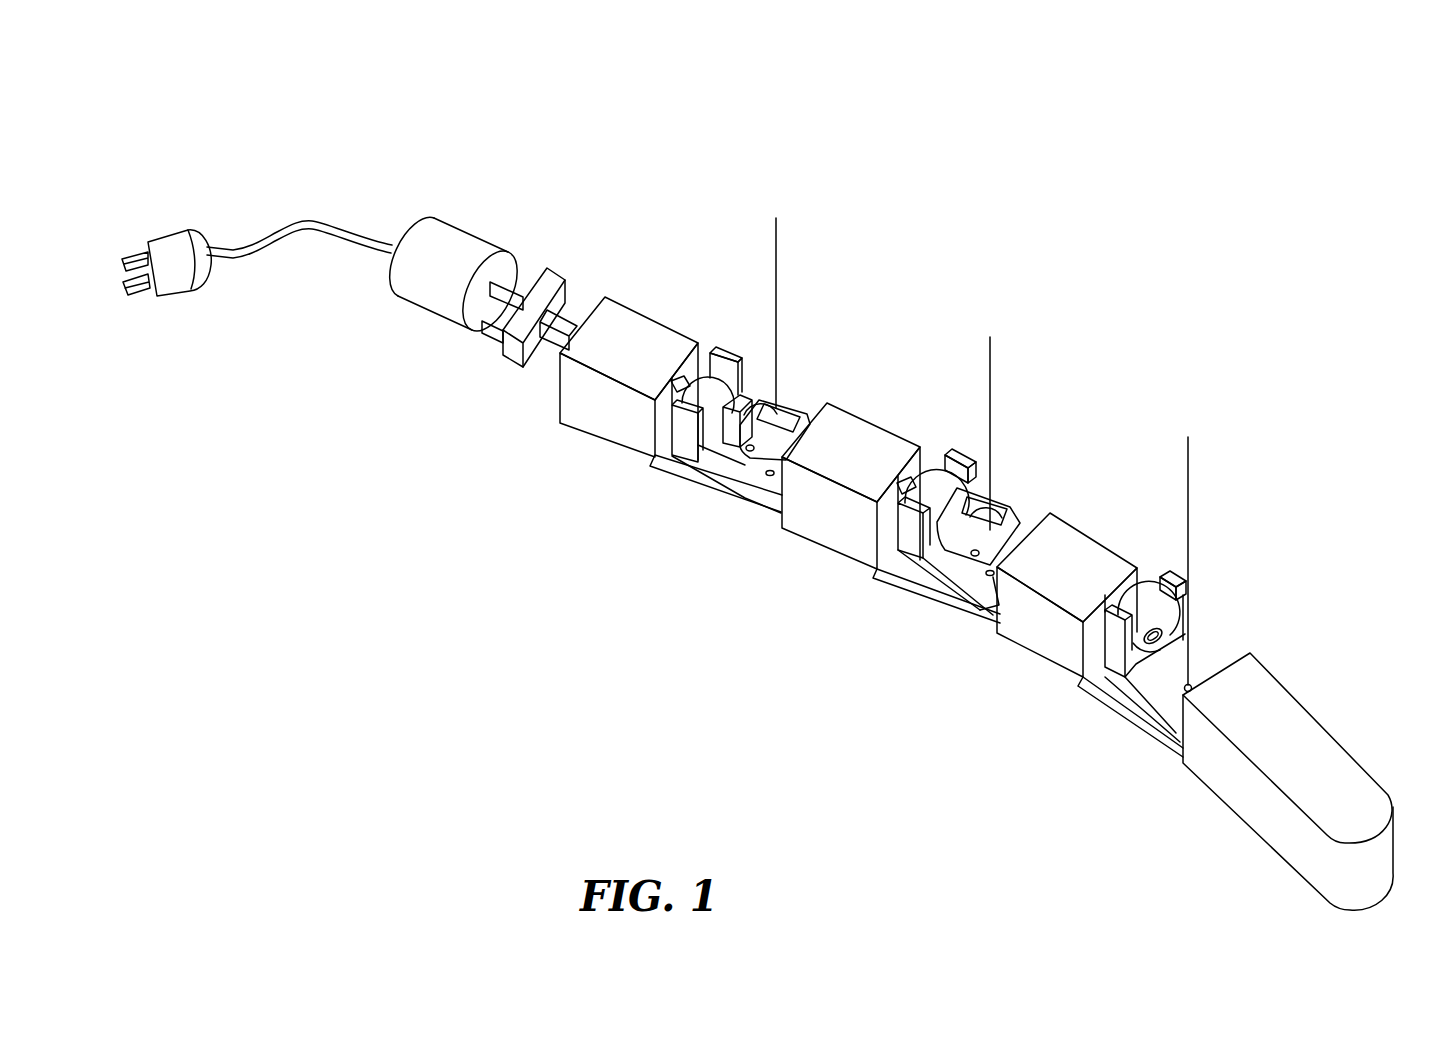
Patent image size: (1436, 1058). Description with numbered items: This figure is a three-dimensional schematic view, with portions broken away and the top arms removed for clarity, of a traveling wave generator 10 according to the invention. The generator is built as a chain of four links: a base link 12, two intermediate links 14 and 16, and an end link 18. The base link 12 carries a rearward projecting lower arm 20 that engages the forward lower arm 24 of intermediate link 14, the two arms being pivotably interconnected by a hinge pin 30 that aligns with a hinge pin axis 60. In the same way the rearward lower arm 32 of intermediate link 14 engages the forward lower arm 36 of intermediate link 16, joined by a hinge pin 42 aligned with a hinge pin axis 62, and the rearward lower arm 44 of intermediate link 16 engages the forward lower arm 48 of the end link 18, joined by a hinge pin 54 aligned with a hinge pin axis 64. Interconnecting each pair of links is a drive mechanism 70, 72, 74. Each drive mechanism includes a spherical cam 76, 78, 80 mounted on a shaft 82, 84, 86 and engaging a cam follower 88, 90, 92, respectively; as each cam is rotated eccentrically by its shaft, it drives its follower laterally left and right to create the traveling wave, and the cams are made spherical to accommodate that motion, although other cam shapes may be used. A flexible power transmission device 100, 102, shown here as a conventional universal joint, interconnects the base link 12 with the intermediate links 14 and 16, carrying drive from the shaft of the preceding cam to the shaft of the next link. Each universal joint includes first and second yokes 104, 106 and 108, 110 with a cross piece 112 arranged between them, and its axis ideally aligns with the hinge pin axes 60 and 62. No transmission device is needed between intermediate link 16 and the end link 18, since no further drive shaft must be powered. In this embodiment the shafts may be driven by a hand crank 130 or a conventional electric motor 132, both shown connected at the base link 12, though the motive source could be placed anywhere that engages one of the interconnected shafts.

The traveling wave generator 10 is at (1076, 256).
The base link 12 is at (630, 308).
The intermediate link 14 is at (877, 423).
The intermediate link 16 is at (1102, 541).
The end link 18 is at (1358, 760).
The lower arm 20 is at (677, 473).
The forward lower arm 24 is at (773, 490).
The hinge pin 30 is at (745, 466).
The rearward lower arm 32 is at (903, 578).
The forward lower arm 36 is at (957, 585).
The hinge pin 42 is at (993, 581).
The rearward lower arm 44 is at (1111, 701).
The forward lower arm 48 is at (1163, 726).
The hinge pin 54 is at (1191, 686).
The hinge pin axis 60 is at (776, 254).
The hinge pin axis 62 is at (991, 381).
The hinge pin axis 64 is at (1190, 457).
The drive mechanism 70 is at (717, 335).
The drive mechanism 72 is at (971, 451).
The drive mechanism 74 is at (1178, 560).
The spherical cam 76 is at (707, 388).
The spherical cam 78 is at (932, 499).
The spherical cam 80 is at (1166, 600).
The shaft 82 is at (683, 383).
The shaft 84 is at (905, 482).
The shaft 86 is at (1115, 602).
The cam follower 88 is at (747, 385).
The cam follower 90 is at (962, 452).
The cam follower 92 is at (1165, 580).
The flexible power transmission device 100 is at (801, 385).
The flexible power transmission device 102 is at (1027, 488).
The first yoke 104 is at (752, 404).
The second yoke 106 is at (807, 418).
The first yoke 108 is at (1002, 497).
The second yoke 110 is at (1020, 530).
The cross piece 112 is at (762, 424).
The hand crank 130 is at (549, 268).
The electric motor 132 is at (454, 229).